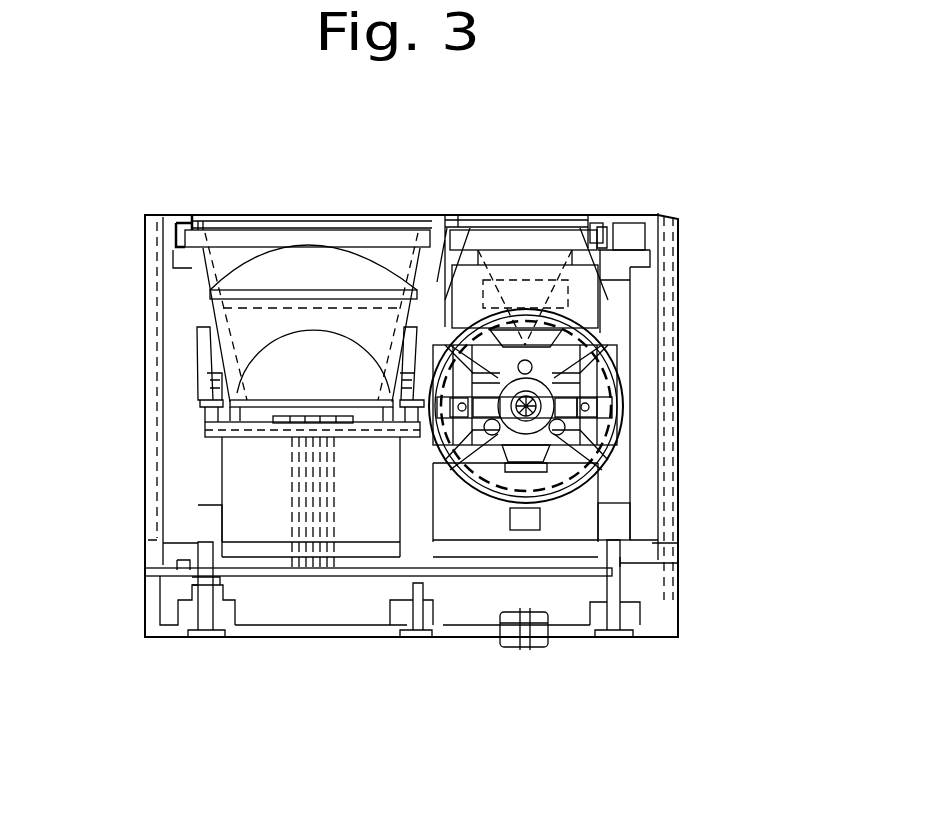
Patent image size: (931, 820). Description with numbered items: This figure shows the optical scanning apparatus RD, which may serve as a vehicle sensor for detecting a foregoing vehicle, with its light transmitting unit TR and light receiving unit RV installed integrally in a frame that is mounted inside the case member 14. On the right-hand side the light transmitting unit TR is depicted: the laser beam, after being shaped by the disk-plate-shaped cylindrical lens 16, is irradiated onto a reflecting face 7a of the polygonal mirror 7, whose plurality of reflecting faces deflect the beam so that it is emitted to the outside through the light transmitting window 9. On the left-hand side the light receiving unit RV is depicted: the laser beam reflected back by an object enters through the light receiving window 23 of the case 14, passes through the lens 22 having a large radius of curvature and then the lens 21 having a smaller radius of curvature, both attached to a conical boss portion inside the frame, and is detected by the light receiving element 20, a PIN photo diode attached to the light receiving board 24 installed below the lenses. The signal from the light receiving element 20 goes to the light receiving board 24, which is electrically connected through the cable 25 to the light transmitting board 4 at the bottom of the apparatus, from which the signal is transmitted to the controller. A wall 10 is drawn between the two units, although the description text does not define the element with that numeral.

The light receiving unit RV is at (242, 210).
The optical scanning apparatus RD is at (688, 218).
The light transmitting unit TR is at (603, 212).
The light transmitting board 4 is at (487, 570).
The polygonal mirror 7 is at (607, 387).
The reflecting face 7a is at (613, 460).
The light transmitting window 9 is at (530, 213).
The partition wall 10 is at (443, 217).
The case 14 is at (667, 527).
The cylindrical lens 16 is at (625, 395).
The light receiving element 20 is at (310, 413).
The lens 21 is at (347, 353).
The lens 22 is at (325, 267).
The light receiving window 23 is at (285, 237).
The light receiving board 24 is at (248, 435).
The cable 25 is at (287, 498).